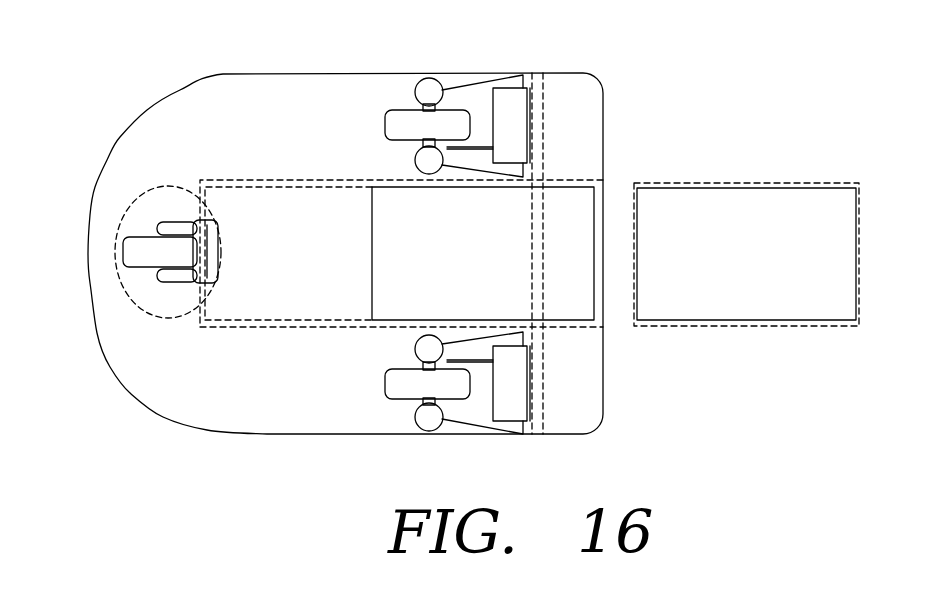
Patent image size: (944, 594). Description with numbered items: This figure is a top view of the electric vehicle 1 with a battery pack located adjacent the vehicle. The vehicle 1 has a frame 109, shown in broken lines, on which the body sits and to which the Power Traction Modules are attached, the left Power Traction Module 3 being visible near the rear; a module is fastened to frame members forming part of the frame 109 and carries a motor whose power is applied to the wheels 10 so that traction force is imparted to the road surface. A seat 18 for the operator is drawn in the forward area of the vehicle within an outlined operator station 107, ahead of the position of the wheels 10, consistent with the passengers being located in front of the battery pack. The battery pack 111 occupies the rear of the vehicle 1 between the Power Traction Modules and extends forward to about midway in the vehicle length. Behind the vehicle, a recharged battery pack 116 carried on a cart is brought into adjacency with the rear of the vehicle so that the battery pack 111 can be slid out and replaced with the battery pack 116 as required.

The vehicle 1 is at (258, 66).
The left Power Traction Module 3 is at (505, 413).
The wheels 10 is at (385, 124).
The operator seat 18 is at (195, 220).
The operator station 107 is at (130, 237).
The frame 109 is at (306, 188).
The battery pack 111 is at (575, 193).
The battery pack 116 is at (776, 263).